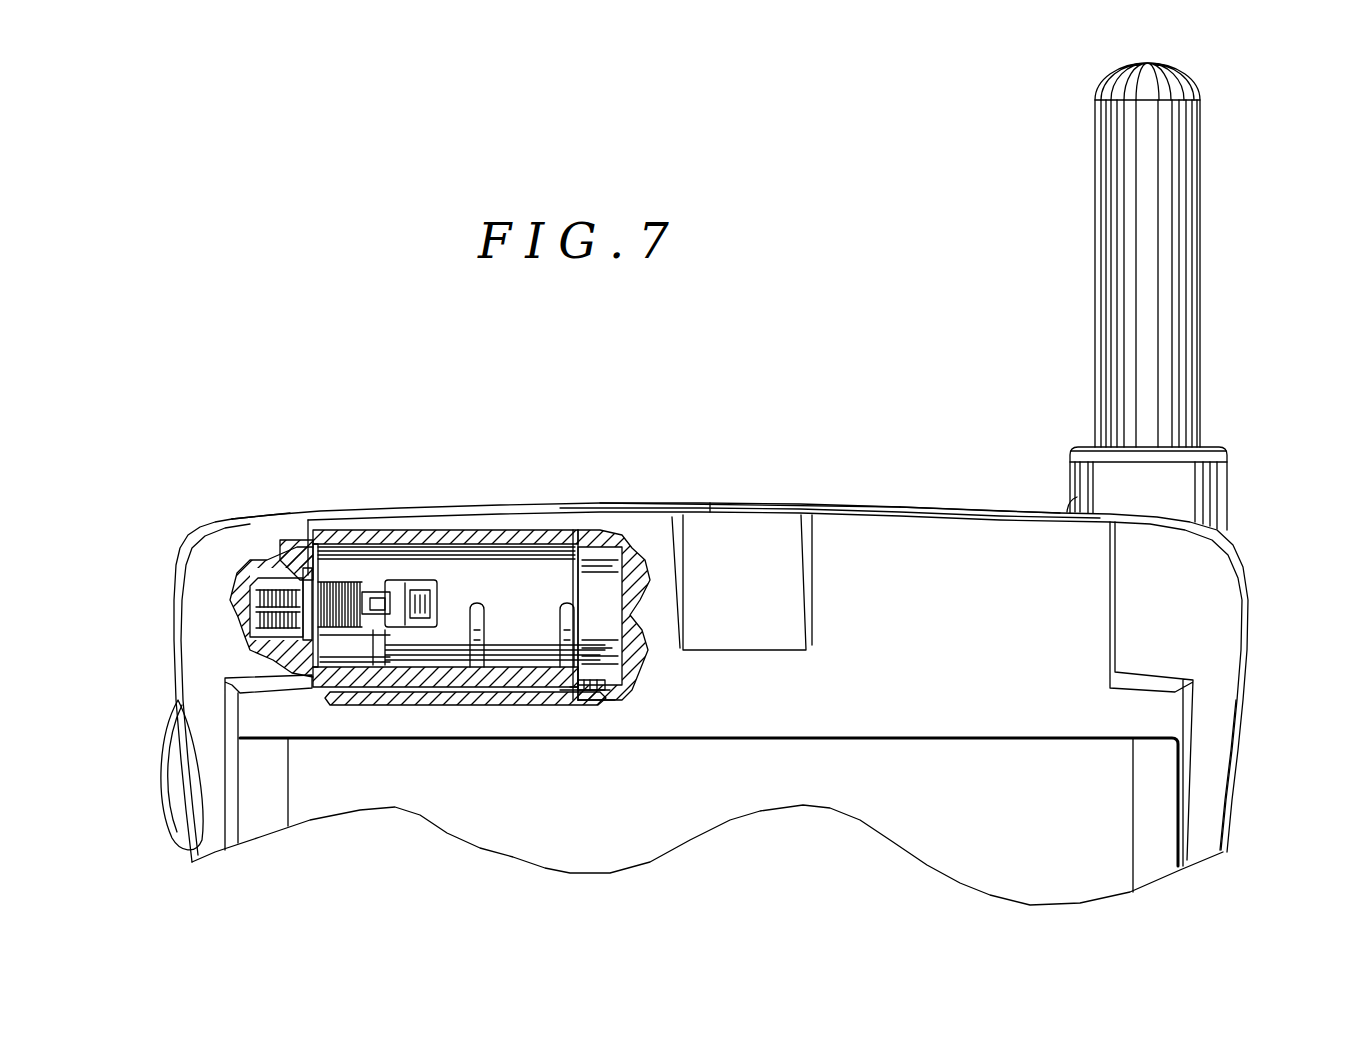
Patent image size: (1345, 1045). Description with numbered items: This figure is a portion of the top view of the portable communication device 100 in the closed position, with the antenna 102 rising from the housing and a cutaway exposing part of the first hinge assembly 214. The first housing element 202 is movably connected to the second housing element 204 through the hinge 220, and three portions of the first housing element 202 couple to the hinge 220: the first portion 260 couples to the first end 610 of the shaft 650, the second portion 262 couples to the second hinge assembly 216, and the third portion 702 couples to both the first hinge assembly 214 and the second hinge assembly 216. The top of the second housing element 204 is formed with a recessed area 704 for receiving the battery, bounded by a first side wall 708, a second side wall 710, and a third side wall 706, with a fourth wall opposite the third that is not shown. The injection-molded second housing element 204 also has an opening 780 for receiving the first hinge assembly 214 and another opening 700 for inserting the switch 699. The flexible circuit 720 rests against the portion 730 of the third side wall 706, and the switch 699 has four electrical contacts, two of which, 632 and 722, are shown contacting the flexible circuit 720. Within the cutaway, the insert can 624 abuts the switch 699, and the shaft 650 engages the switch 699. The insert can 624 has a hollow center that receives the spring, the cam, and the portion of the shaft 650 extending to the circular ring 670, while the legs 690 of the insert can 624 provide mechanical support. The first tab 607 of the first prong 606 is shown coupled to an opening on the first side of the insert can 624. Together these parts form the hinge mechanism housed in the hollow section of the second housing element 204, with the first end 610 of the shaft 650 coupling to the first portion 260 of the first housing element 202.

The portable communication device 100 is at (322, 370).
The antenna 102 is at (1190, 250).
The first housing element 202 is at (1218, 560).
The second housing element 204 is at (1145, 718).
The first hinge assembly 214 is at (236, 518).
The second hinge assembly 216 is at (958, 528).
The hinge 220 is at (650, 530).
The first portion of the first housing element 260 is at (176, 653).
The second portion of the first housing element 262 is at (1255, 596).
The first prong 606 is at (340, 598).
The first tab 607 is at (395, 598).
The first end of the shaft 610 is at (263, 595).
The insert can 624 is at (492, 553).
The electrical contact 632 is at (588, 690).
The shaft 650 is at (623, 610).
The circular ring 670 is at (298, 590).
The legs 690 is at (565, 653).
The switch 699 is at (600, 570).
The opening 700 is at (605, 700).
The third portion of the first housing element 702 is at (748, 530).
The recessed area 704 is at (985, 885).
The third side wall 706 is at (1075, 740).
The first side wall 708 is at (288, 790).
The second side wall 710 is at (1133, 843).
The flexible circuit 720 is at (350, 688).
The electrical contact 722 is at (610, 683).
The portion of the third side wall 730 is at (417, 703).
The opening 780 is at (262, 558).